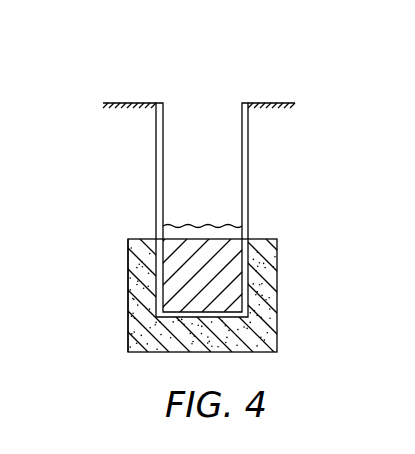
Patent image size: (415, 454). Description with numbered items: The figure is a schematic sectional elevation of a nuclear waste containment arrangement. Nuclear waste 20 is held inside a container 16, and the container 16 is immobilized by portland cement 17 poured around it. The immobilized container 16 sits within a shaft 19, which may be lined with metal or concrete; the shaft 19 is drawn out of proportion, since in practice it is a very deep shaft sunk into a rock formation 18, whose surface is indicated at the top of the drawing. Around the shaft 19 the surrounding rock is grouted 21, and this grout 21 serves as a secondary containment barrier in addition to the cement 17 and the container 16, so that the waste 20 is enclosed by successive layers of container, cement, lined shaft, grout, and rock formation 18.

The container 16 is at (277, 252).
The portland cement 17 is at (178, 232).
The rock formation 18 is at (125, 128).
The shaft 19 is at (165, 126).
The nuclear waste 20 is at (217, 265).
The grout 21 is at (128, 330).